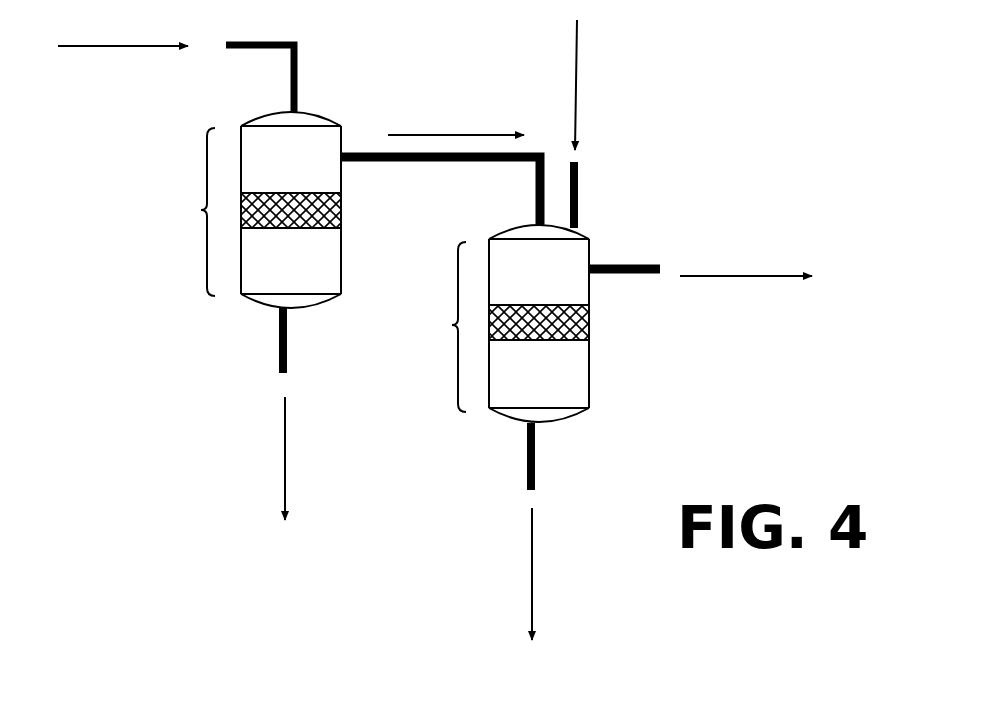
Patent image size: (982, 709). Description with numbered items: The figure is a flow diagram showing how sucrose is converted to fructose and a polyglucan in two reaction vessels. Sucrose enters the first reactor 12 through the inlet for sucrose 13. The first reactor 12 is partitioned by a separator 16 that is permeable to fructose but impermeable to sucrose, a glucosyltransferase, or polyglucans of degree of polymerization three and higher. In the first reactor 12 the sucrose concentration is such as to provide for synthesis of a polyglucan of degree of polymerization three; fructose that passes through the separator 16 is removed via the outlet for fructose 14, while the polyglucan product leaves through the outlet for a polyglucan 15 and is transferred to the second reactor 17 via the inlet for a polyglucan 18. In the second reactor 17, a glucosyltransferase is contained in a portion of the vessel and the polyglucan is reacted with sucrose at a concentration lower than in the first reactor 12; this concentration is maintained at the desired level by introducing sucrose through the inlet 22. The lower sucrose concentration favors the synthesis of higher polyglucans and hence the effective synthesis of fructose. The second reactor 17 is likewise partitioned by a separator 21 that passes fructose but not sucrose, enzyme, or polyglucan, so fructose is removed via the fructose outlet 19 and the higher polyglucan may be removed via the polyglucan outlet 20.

The first reactor 12 is at (247, 210).
The inlet for sucrose 13 is at (260, 57).
The outlet for fructose 14 is at (309, 414).
The outlet for a DP3-4 or higher polyglucan 15 is at (440, 169).
The separator 16 is at (341, 216).
The second reactor 17 is at (496, 323).
The inlet for a DP3-4 or higher polyglucan 18 is at (474, 133).
The fructose outlet 19 is at (560, 531).
The polyglucan outlet 20 is at (700, 250).
The separator 21 is at (586, 332).
The inlet for sucrose 22 is at (599, 124).